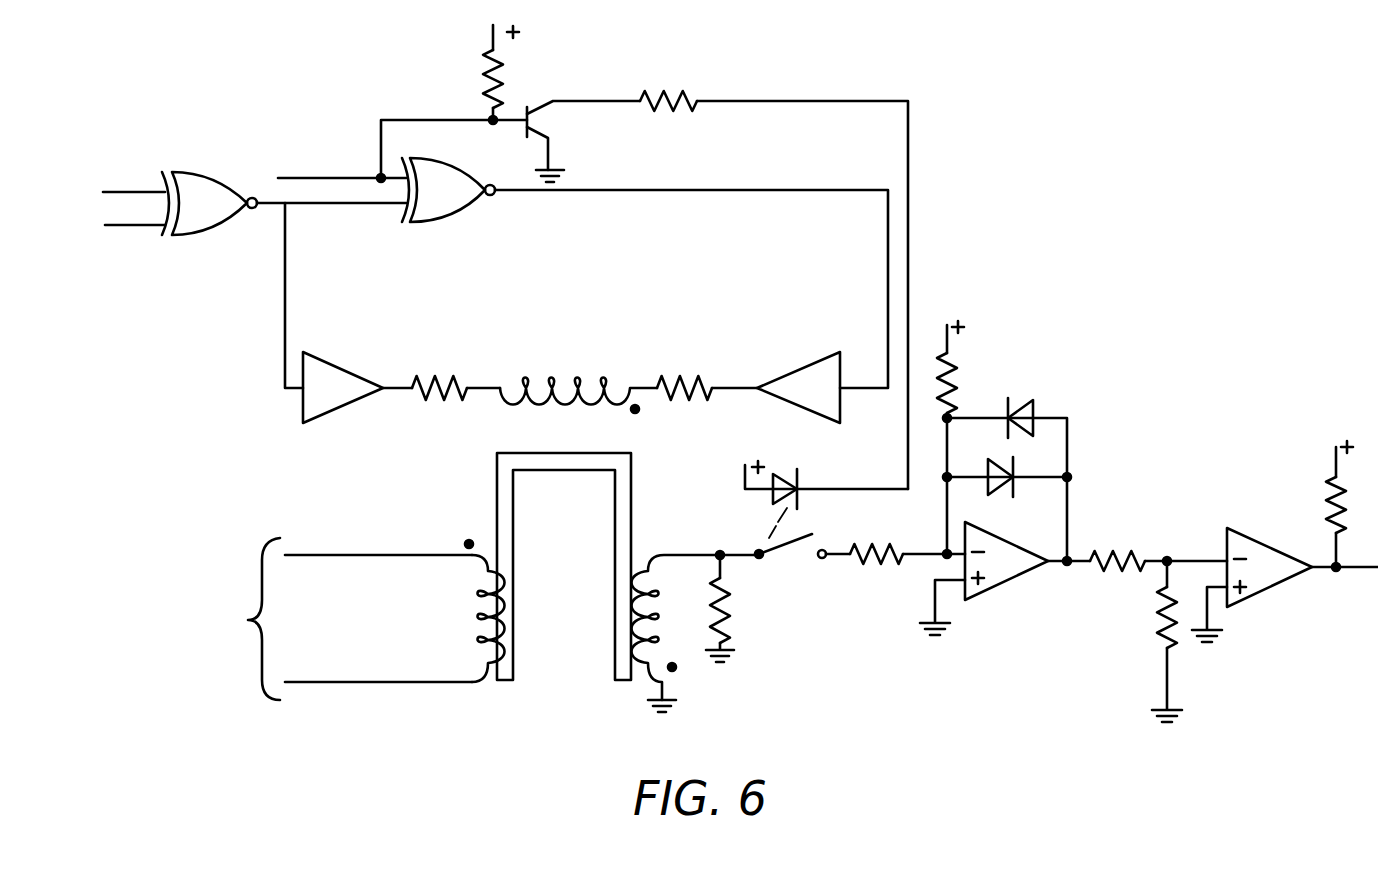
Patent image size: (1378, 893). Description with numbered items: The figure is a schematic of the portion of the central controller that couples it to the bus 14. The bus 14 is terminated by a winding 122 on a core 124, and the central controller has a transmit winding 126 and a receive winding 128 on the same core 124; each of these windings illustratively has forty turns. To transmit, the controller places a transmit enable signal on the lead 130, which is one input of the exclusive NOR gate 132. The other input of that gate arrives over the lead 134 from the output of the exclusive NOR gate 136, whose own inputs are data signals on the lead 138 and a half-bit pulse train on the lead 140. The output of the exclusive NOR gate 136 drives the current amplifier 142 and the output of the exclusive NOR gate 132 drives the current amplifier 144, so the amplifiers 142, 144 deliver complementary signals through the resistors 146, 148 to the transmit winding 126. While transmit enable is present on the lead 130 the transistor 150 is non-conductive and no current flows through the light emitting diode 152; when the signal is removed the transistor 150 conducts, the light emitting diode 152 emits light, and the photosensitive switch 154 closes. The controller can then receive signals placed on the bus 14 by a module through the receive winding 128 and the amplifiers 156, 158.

The bus 14 is at (357, 683).
The winding 122 is at (447, 683).
The core 124 is at (517, 648).
The transmit winding 126 is at (577, 378).
The receive winding 128 is at (647, 555).
The lead 130 is at (278, 180).
The exclusive NOR gate 132 is at (435, 222).
The lead 134 is at (370, 205).
The exclusive NOR gate 136 is at (205, 236).
The lead 138 is at (128, 226).
The lead 140 is at (100, 192).
The current amplifier 142 is at (327, 352).
The current amplifier 144 is at (825, 355).
The resistor 146 is at (428, 378).
The resistor 148 is at (668, 378).
The transistor 150 is at (642, 257).
The light emitting diode 152 is at (774, 472).
The photosensitive switch 154 is at (785, 563).
The amplifier 156 is at (992, 570).
The amplifier 158 is at (1260, 573).